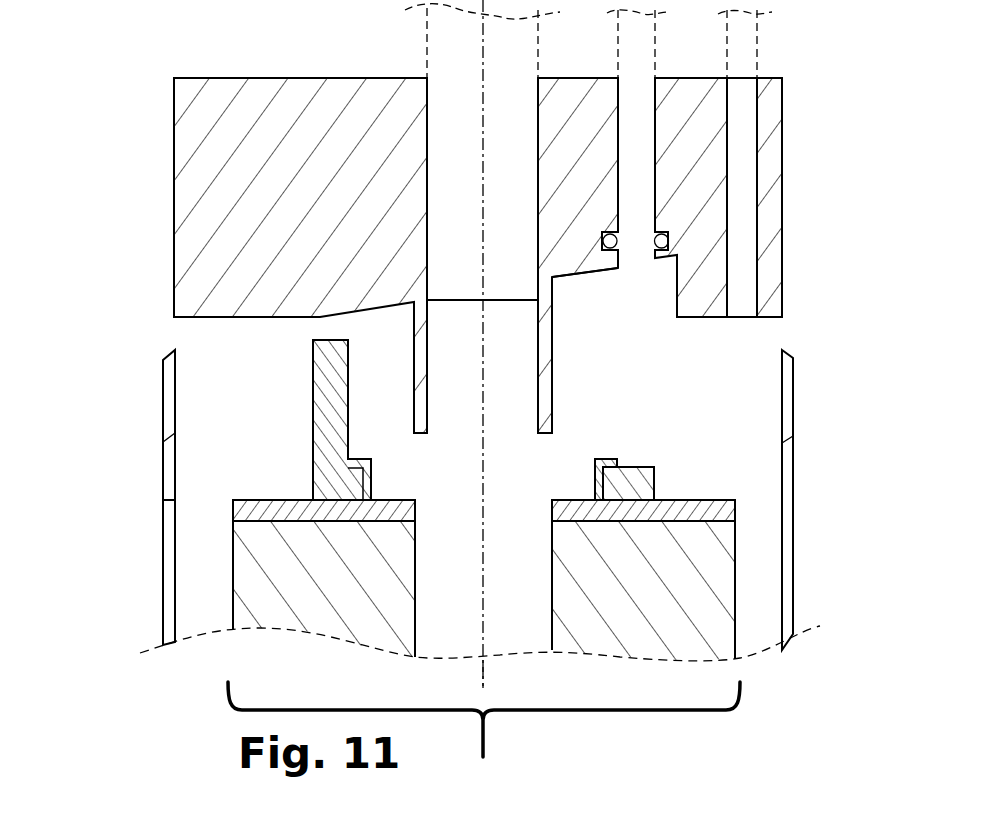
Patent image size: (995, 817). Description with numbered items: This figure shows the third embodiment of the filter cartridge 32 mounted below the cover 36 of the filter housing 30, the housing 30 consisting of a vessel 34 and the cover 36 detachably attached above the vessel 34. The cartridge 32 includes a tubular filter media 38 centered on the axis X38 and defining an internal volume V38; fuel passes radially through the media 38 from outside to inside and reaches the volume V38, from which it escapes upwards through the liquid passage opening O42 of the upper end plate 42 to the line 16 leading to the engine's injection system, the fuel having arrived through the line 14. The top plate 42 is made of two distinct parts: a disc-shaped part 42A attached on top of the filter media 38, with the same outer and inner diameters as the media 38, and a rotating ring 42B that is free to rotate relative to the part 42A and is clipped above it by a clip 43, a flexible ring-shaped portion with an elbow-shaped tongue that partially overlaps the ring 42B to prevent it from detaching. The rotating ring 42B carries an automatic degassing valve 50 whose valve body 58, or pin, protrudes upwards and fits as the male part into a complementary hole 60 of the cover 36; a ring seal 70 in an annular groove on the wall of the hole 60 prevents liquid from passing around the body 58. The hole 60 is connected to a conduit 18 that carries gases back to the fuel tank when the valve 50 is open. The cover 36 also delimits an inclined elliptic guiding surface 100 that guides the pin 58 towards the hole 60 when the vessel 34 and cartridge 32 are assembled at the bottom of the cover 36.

The line 14 is at (743, 37).
The line 16 is at (455, 40).
The conduit 18 is at (636, 58).
The hole 60 is at (636, 151).
The seal 70 is at (668, 241).
The guiding surface 100 is at (599, 289).
The filter housing 30 is at (415, 474).
The vessel 34 is at (129, 527).
The cover 36 is at (193, 298).
The automatic degassing valve 50 is at (284, 420).
The valve body 58 is at (328, 400).
The upper end plate 42 is at (573, 499).
The disc-shaped part 42A is at (680, 512).
The rotating ring 42B is at (630, 486).
The clip 43 is at (605, 463).
The filter media 38 is at (695, 597).
The filter cartridge 32 is at (484, 738).
The liquid passage opening O42 is at (431, 508).
The internal volume V38 is at (483, 344).
The axis X38 is at (483, 672).